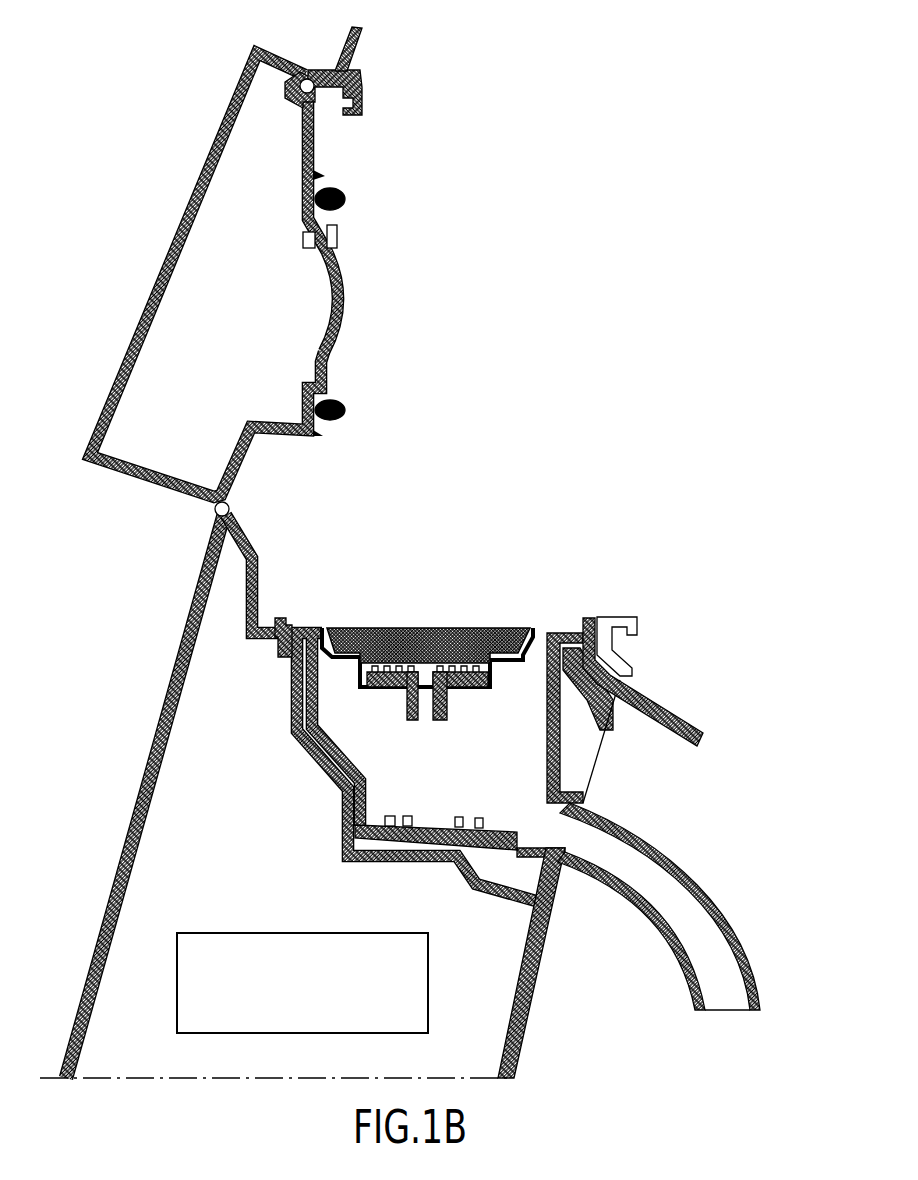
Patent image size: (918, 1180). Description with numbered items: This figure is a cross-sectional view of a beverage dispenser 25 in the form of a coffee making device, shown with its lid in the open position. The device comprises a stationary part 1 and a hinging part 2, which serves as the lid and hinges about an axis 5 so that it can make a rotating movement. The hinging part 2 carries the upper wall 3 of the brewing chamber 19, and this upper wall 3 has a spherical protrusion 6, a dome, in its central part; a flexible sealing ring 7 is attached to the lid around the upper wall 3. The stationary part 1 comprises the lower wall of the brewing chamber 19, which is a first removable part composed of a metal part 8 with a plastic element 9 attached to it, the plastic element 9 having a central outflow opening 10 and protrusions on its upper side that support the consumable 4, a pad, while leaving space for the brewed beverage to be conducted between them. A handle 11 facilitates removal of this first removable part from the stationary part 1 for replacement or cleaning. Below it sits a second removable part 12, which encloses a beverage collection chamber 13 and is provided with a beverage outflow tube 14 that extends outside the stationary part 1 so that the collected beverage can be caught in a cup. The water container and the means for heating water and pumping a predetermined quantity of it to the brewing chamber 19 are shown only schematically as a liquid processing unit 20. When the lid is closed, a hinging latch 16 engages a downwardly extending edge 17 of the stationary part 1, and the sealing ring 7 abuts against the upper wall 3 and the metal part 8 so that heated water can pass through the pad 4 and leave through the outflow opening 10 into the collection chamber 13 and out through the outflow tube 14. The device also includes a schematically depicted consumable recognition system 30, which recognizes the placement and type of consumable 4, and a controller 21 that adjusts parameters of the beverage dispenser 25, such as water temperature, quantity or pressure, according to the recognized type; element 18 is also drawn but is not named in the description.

The stationary part 1 is at (118, 873).
The hinging part 2 is at (171, 243).
The upper wall 3 is at (327, 367).
The consumable 4 is at (430, 626).
The axis 5 is at (212, 511).
The spherical protrusion 6 is at (345, 305).
The flexible sealing ring 7 is at (347, 198).
The metal part 8 is at (306, 625).
The plastic element 9 is at (380, 690).
The central outflow opening 10 is at (426, 705).
The handle 11 is at (703, 738).
The second removable part 12 is at (442, 826).
The beverage collection chamber 13 is at (535, 745).
The beverage outflow tube 14 is at (693, 922).
The hinging latch 16 is at (363, 106).
The downwardly extending edge 17 is at (640, 628).
The handle / lever blade 18 is at (363, 40).
The brewing chamber 19 is at (330, 640).
The liquid processing unit 20 is at (230, 932).
The controller 21 is at (302, 240).
The beverage dispenser 25 is at (608, 102).
The consumable recognition system 30 is at (340, 237).